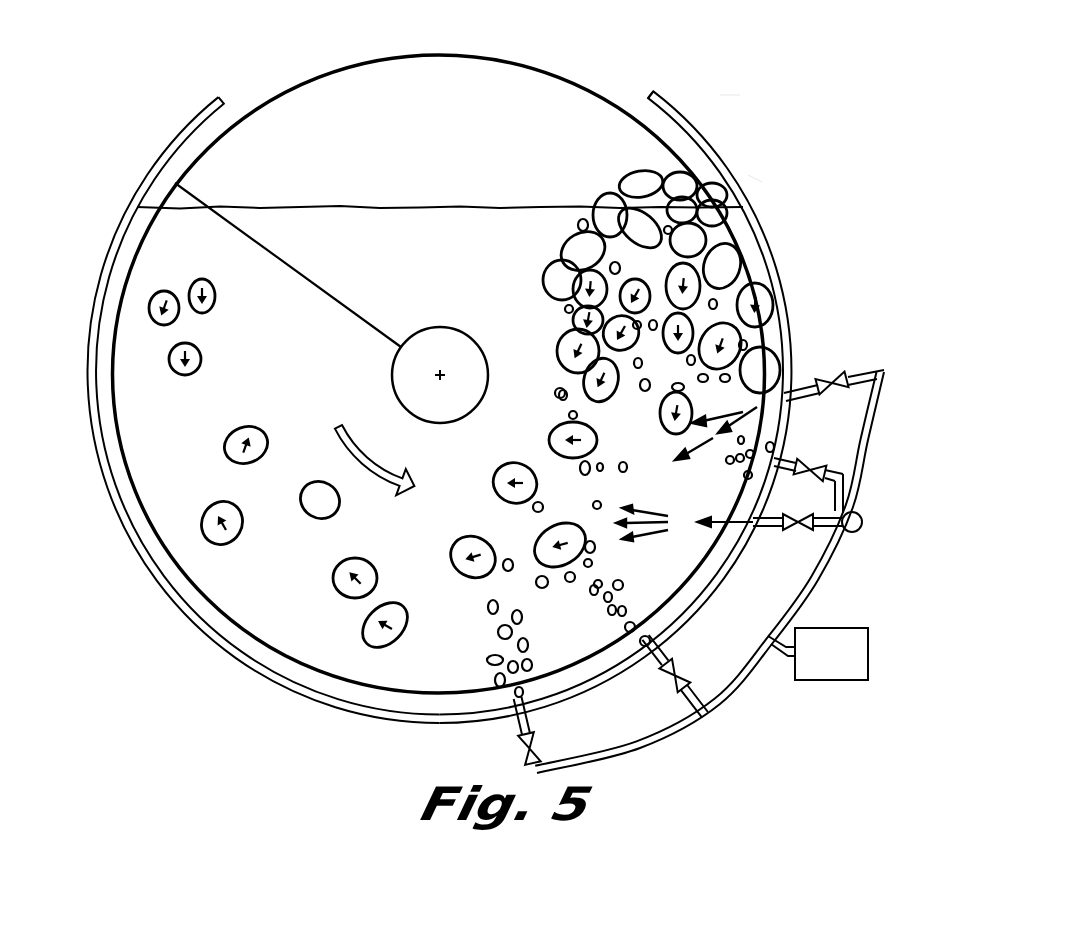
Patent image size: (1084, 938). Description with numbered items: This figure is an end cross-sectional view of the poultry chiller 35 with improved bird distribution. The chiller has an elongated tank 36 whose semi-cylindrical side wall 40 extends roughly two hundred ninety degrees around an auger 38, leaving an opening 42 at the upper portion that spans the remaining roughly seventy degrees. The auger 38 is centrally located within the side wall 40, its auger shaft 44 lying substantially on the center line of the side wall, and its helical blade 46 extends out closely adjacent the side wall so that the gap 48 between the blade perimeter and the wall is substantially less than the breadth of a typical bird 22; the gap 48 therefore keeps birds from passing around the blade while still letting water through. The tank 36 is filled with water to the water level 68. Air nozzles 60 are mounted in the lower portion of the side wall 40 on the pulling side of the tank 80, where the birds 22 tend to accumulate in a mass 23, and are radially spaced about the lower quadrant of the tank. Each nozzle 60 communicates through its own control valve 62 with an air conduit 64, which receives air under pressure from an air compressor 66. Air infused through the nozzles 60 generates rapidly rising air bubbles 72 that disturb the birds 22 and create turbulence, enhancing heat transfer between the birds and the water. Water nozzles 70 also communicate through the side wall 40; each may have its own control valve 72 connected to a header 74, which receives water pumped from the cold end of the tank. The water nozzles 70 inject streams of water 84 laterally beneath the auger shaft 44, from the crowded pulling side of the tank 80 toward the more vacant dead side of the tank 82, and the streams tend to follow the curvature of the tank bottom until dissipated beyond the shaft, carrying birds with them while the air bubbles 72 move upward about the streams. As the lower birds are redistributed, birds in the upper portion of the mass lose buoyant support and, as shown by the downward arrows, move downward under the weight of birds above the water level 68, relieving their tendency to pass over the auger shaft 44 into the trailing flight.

The bird 22 is at (768, 352).
The aggregate charge 23 is at (668, 279).
The poultry chiller 35 is at (731, 90).
The elongated tank 36 is at (742, 181).
The auger 38 is at (555, 74).
The semi-cylindrical side wall 40 is at (778, 258).
The opening 42 is at (651, 95).
The auger shaft 44 is at (437, 328).
The helical blade 46 is at (445, 137).
The gap 48 is at (127, 253).
The air nozzles 60 is at (788, 452).
The control valves 62 is at (808, 486).
The air conduit 64 is at (817, 557).
The air compressor 66 is at (840, 682).
The water level 68 is at (333, 207).
The water nozzles 70 is at (765, 533).
The air bubbles 72 is at (783, 515).
The header 74 is at (860, 530).
The pulling side of the tank 80 is at (633, 437).
The dead side of the tank 82 is at (300, 374).
The streams of water 84 is at (705, 395).